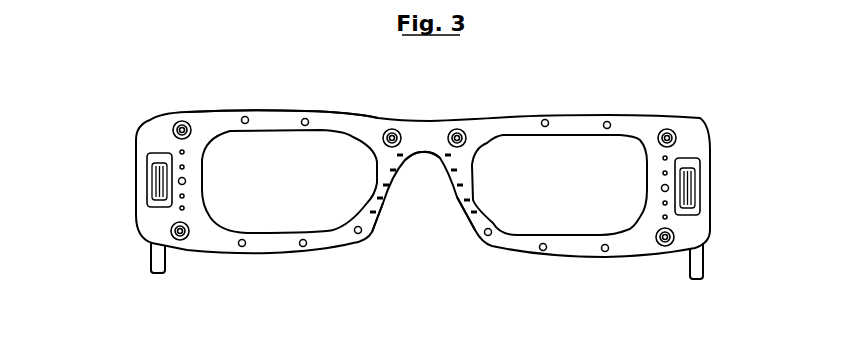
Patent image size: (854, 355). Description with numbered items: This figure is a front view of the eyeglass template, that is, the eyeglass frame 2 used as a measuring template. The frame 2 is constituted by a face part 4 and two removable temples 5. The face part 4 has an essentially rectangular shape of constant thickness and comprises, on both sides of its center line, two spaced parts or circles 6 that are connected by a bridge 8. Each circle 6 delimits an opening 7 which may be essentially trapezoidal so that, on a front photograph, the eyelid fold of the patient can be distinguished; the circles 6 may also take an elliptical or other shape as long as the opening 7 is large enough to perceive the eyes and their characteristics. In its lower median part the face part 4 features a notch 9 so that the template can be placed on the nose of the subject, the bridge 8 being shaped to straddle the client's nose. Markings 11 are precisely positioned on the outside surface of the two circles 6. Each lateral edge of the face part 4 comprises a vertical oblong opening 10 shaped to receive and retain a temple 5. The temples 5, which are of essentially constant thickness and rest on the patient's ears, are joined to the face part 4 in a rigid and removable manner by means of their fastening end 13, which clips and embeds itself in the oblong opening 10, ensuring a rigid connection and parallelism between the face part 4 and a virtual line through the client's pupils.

The eyeglass frame 2 is at (155, 100).
The face part 4 is at (272, 113).
The removable temples 5 is at (157, 263).
The circles 6 is at (220, 223).
The opening 7 is at (528, 162).
The bridge 8 is at (425, 150).
The notch 9 is at (415, 212).
The vertical oblong opening 10 is at (160, 155).
The markings 11 is at (303, 247).
The fastening end 13 is at (147, 175).